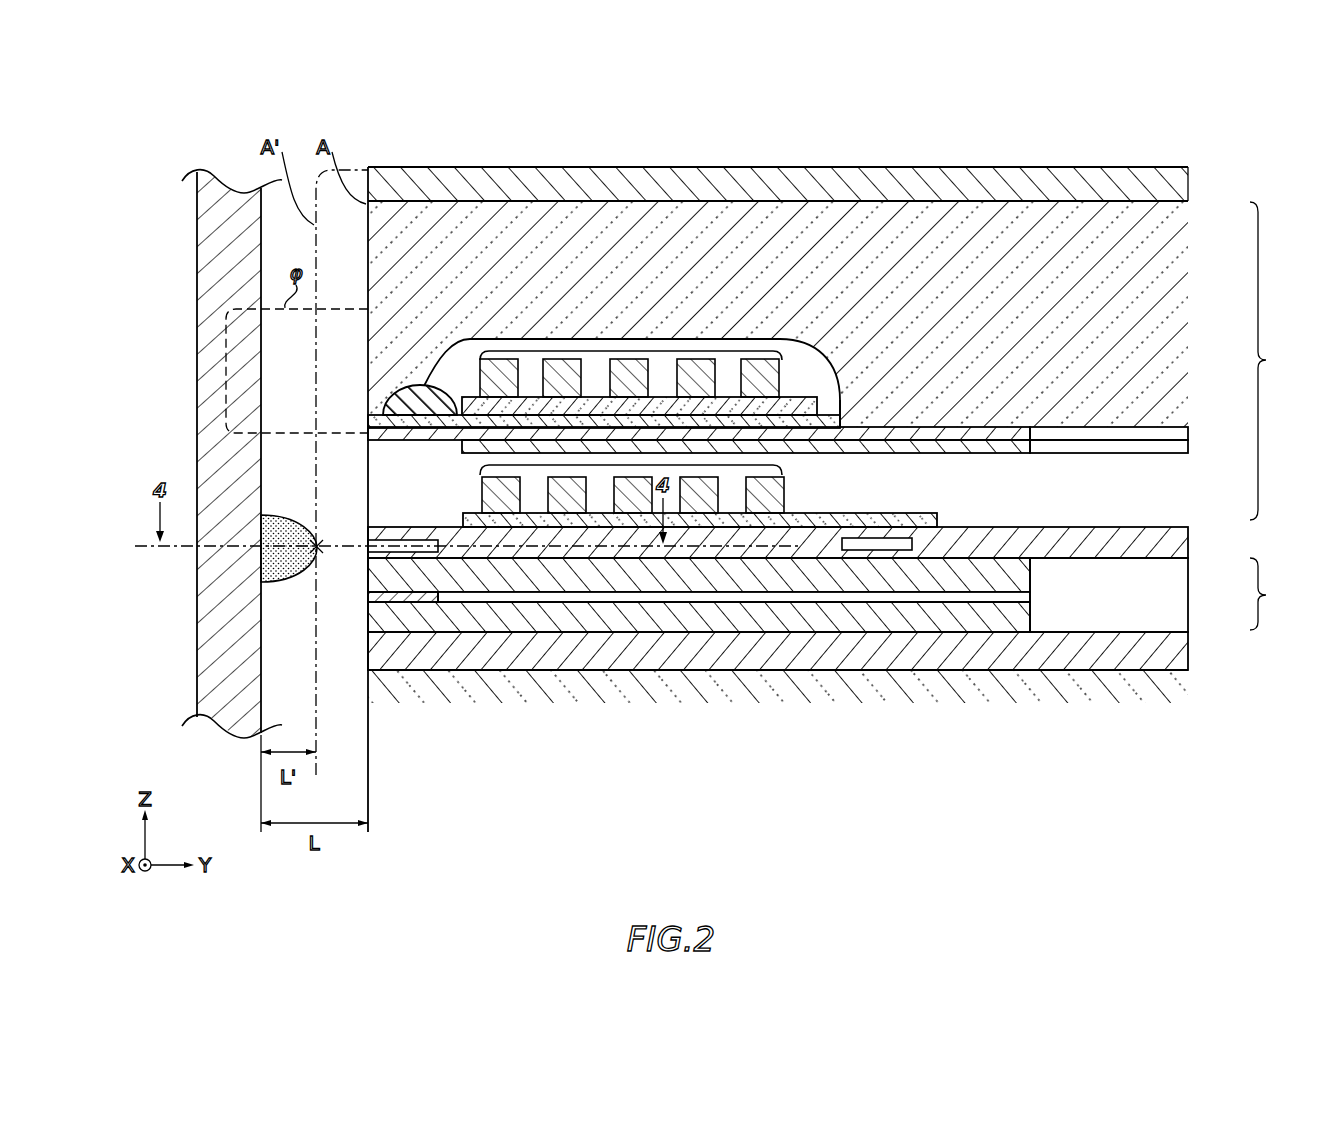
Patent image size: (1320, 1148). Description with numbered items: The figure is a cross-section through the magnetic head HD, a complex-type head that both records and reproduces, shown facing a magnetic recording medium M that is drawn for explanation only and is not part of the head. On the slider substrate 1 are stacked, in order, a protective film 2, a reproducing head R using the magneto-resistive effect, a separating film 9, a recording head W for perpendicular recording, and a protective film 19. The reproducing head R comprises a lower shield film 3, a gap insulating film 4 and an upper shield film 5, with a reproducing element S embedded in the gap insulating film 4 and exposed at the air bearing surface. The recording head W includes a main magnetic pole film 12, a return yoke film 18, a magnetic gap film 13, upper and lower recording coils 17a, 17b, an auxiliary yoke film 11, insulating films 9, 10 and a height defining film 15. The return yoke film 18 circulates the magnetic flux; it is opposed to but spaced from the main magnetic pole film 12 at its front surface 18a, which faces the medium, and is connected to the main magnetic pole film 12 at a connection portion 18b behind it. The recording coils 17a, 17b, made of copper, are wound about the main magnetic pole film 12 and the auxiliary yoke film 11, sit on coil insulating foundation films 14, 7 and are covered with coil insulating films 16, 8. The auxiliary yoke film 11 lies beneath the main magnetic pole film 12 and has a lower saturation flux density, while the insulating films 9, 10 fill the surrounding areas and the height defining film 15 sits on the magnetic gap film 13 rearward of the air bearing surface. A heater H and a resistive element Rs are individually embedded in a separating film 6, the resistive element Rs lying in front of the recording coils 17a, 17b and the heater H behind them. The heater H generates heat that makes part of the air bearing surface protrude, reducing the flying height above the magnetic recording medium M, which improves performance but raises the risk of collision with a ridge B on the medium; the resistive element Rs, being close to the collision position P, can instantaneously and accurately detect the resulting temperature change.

The slider substrate 1 is at (607, 690).
The protective film 2 is at (648, 662).
The lower shield film 3 is at (694, 622).
The gap insulating film 4 is at (740, 596).
The upper shield film 5 is at (787, 573).
The separating film 6 is at (820, 540).
The coil insulating foundation film 7 is at (917, 520).
The coil insulating film 8 is at (983, 490).
The separating film 9 is at (1185, 452).
The insulating film 10 is at (1185, 432).
The auxiliary yoke film 11 is at (1018, 447).
The main magnetic pole film 12 is at (972, 433).
The magnetic gap film 13 is at (592, 418).
The coil insulating foundation film 14 is at (528, 408).
The height defining film 15 is at (463, 368).
The coil insulating film 16 is at (466, 342).
The upper recording coil 17a is at (648, 463).
The lower recording coil 17b is at (655, 417).
The return yoke film 18 is at (760, 255).
The front surface 18a is at (416, 388).
The connection portion 18b is at (865, 397).
The protective film 19 is at (822, 183).
The reproducing element S is at (400, 598).
The resistive element Rs is at (428, 546).
The heater H is at (883, 543).
The magnetic head HD is at (1128, 149).
The magnetic recording medium M is at (214, 487).
The ridge B is at (282, 515).
The collision position P is at (323, 562).
The recording head W is at (1271, 361).
The reproducing head R is at (1270, 594).